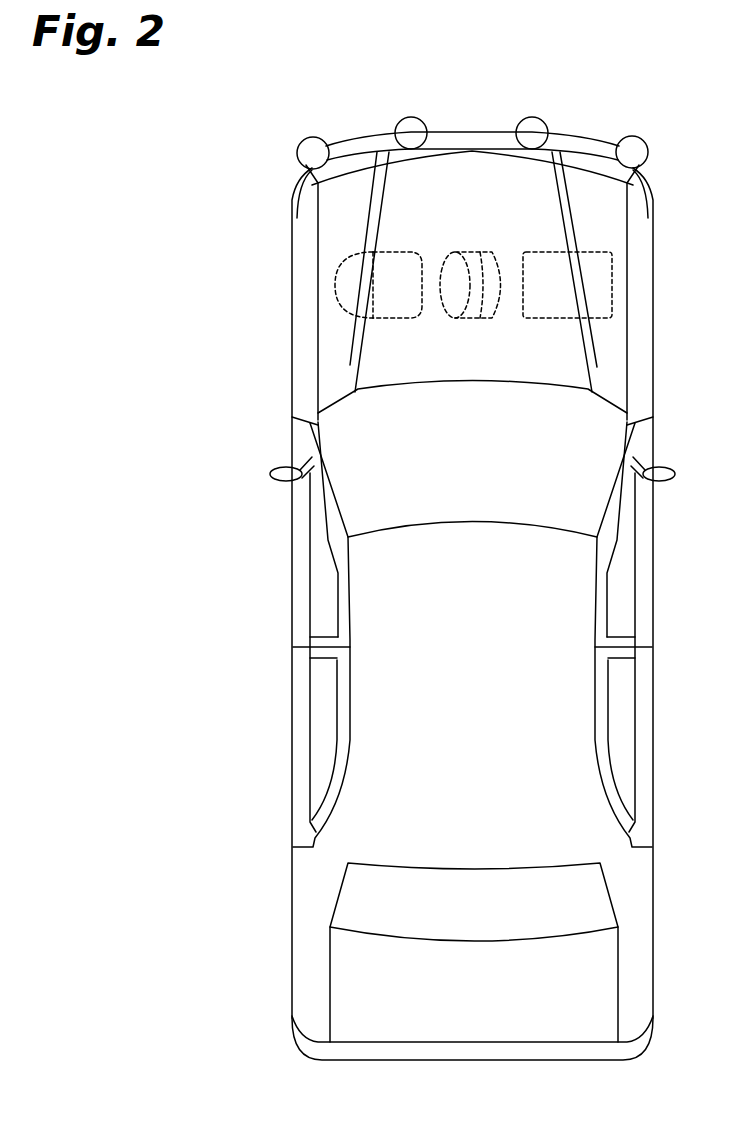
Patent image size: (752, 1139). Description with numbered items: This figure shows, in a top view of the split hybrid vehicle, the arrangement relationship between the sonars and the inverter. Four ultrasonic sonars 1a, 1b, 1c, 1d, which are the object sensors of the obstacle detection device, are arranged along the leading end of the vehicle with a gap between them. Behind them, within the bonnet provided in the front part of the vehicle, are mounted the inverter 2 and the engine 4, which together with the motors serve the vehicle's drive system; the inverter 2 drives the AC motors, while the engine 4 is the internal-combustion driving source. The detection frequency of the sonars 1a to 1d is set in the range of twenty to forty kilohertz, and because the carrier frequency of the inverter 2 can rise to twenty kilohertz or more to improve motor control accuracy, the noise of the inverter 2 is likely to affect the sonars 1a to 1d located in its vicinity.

The sonar 1a is at (309, 138).
The sonar 1b is at (411, 117).
The sonar 1c is at (530, 117).
The sonar 1d is at (633, 136).
The inverter 2 is at (335, 290).
The engine 4 is at (612, 292).